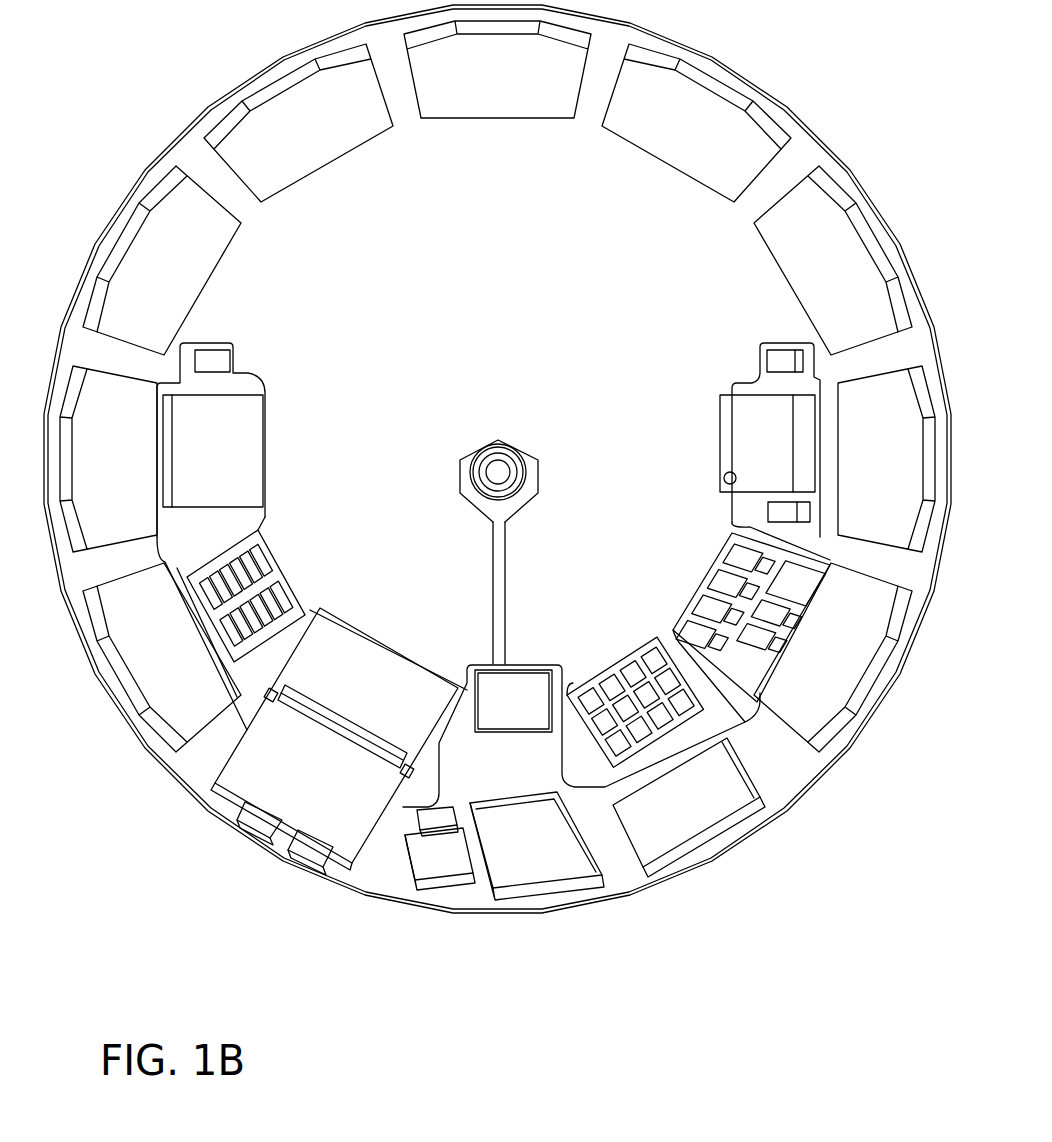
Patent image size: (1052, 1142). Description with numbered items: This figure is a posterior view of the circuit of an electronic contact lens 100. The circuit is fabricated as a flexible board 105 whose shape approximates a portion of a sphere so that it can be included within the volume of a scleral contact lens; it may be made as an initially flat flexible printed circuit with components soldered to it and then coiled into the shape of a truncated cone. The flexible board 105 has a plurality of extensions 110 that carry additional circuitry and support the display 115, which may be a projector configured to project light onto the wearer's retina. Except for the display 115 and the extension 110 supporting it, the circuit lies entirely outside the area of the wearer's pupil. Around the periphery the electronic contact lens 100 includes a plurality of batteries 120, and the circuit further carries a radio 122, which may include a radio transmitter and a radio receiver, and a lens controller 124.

The electronic contact lens 100 is at (85, 115).
The flexible board 105 is at (733, 850).
The extensions 110 is at (258, 376).
The display 115 is at (527, 457).
The batteries 120 is at (324, 165).
The radio 122 is at (727, 427).
The lens controller 124 is at (258, 432).